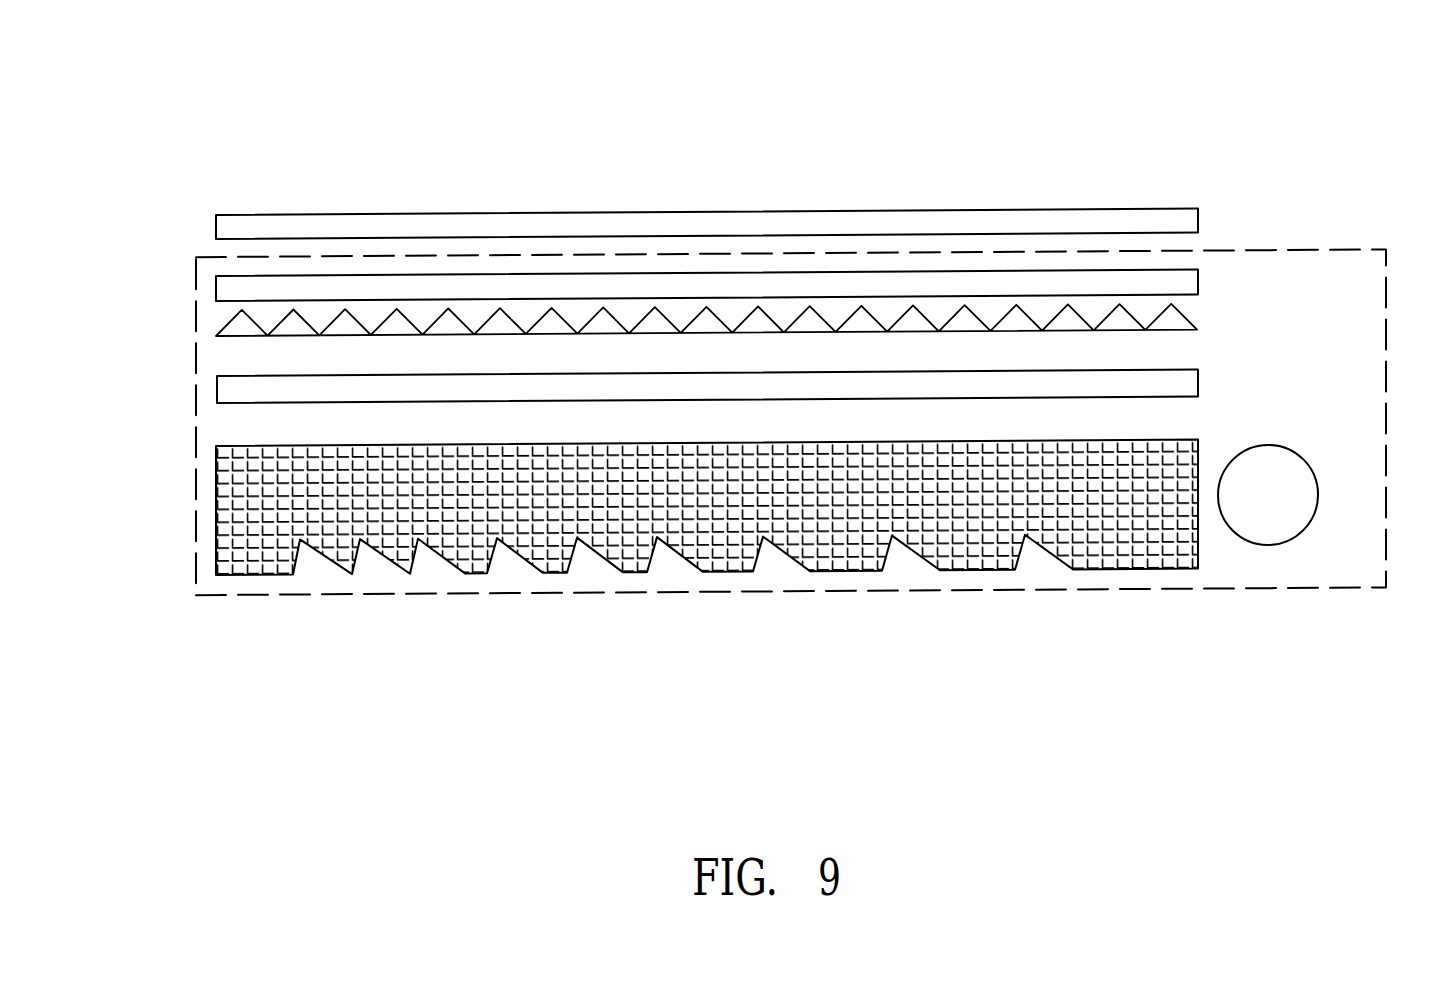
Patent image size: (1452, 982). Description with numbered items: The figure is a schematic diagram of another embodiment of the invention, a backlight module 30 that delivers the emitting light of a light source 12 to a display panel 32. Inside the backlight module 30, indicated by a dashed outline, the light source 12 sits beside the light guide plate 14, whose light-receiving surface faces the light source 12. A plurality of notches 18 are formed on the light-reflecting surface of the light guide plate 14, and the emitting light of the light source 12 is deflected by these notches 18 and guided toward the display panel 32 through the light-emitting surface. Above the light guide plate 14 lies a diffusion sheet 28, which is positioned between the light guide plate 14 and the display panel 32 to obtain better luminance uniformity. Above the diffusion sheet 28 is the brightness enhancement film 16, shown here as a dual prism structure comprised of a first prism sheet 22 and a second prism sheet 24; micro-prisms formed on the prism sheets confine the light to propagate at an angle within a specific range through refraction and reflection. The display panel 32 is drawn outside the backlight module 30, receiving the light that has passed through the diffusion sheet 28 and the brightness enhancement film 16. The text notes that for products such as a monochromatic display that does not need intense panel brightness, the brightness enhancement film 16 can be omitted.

The light source 12 is at (1316, 515).
The light guide plate 14 is at (645, 531).
The brightness enhancement film 16 is at (800, 299).
The notches 18 is at (772, 560).
The first prism sheet 22 is at (1198, 326).
The second prism sheet 24 is at (1200, 282).
The diffusion sheet 28 is at (1200, 383).
The backlight module 30 is at (1278, 248).
The display panel 32 is at (215, 228).